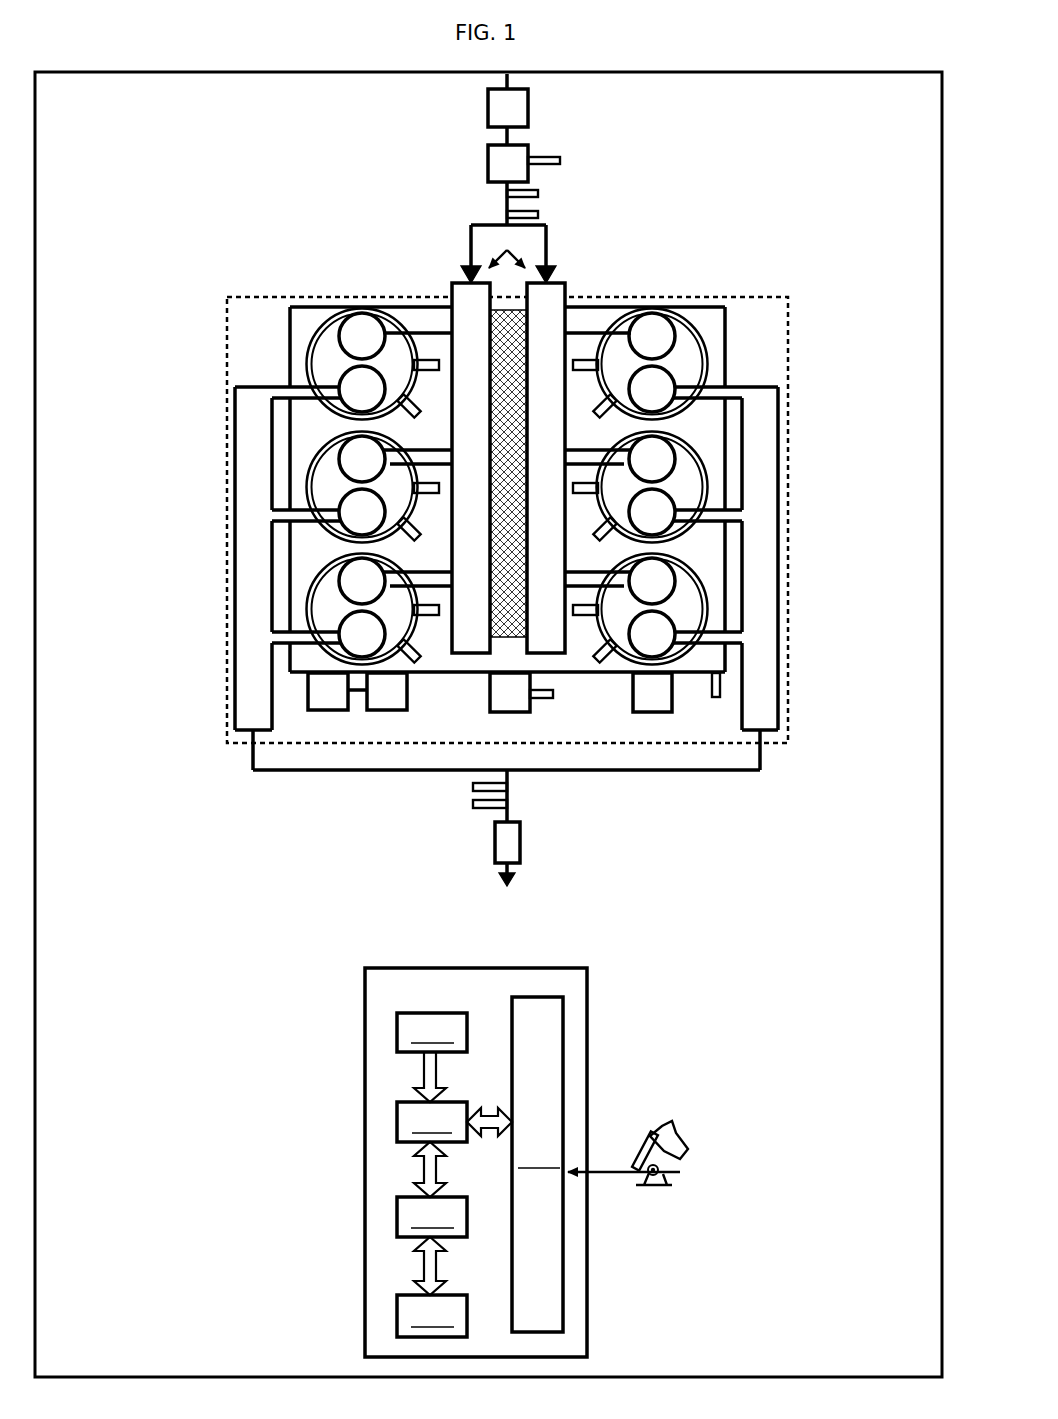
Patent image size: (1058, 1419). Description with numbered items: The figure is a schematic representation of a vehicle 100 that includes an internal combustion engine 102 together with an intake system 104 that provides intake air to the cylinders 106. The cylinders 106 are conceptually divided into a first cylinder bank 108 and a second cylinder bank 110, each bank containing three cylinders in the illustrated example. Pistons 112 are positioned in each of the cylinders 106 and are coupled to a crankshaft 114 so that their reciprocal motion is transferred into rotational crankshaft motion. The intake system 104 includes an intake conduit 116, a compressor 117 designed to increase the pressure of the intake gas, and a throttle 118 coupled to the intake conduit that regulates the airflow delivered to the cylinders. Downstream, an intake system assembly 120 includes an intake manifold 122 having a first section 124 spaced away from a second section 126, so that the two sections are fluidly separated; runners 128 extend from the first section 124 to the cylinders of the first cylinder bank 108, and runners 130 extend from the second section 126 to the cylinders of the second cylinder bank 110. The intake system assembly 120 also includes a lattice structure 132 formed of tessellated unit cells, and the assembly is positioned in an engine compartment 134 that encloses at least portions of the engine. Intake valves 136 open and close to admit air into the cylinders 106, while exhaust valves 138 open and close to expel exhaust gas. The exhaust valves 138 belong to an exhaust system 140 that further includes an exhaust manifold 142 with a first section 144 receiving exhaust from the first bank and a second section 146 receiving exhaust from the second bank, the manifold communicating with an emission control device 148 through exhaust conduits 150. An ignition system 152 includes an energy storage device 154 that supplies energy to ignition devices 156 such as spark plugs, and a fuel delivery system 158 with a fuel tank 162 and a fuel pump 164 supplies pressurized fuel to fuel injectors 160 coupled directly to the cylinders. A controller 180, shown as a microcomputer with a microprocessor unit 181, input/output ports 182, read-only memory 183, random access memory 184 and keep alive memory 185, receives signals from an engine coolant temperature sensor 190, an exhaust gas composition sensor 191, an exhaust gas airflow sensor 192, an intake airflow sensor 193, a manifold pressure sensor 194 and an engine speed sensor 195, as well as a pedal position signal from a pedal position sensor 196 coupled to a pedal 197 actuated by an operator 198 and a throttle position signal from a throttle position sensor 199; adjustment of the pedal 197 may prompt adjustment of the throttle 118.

The vehicle 100 is at (898, 72).
The internal combustion engine 102 is at (290, 322).
The intake system 104 is at (374, 192).
The cylinders 106 is at (314, 344).
The first cylinder bank 108 is at (288, 377).
The second cylinder bank 110 is at (727, 362).
The pistons 112 is at (378, 326).
The crankshaft 114 is at (490, 692).
The intake conduit 116 is at (508, 134).
The compressor 117 is at (488, 104).
The throttle 118 is at (488, 177).
The intake system assembly 120 is at (596, 275).
The intake manifold 122 is at (507, 248).
The first section 124 is at (455, 282).
The second section 126 is at (552, 282).
The runners 128 is at (450, 326).
The runners 130 is at (602, 298).
The lattice structure 132 is at (507, 640).
The engine compartment 134 is at (270, 297).
The intake valves 136 is at (377, 346).
The exhaust valves 138 is at (377, 399).
The exhaust system 140 is at (889, 575).
The exhaust manifold 142 is at (506, 558).
The first section 144 is at (250, 673).
The second section 146 is at (762, 657).
The emission control device 148 is at (495, 858).
The exhaust conduits 150 is at (325, 772).
The ignition system 152 is at (692, 752).
The energy storage device 154 is at (640, 712).
The ignition devices 156 is at (406, 412).
The fuel delivery system 158 is at (293, 753).
The fuel injectors 160 is at (435, 371).
The fuel tank 162 is at (344, 711).
The fuel pump 164 is at (373, 711).
The controller 180 is at (372, 968).
The microprocessor unit 181 is at (455, 1102).
The input/output ports 182 is at (512, 1030).
The read-only memory 183 is at (398, 1013).
The random access memory 184 is at (455, 1197).
The keep alive memory 185 is at (455, 1295).
The engine coolant temperature sensor 190 is at (717, 698).
The exhaust gas composition sensor 191 is at (473, 787).
The exhaust gas airflow sensor 192 is at (473, 804).
The intake airflow sensor 193 is at (538, 194).
The manifold pressure sensor 194 is at (538, 215).
The engine speed sensor 195 is at (553, 694).
The pedal position sensor 196 is at (660, 1177).
The pedal 197 is at (636, 1152).
The operator 198 is at (680, 1135).
The throttle position sensor 199 is at (560, 161).